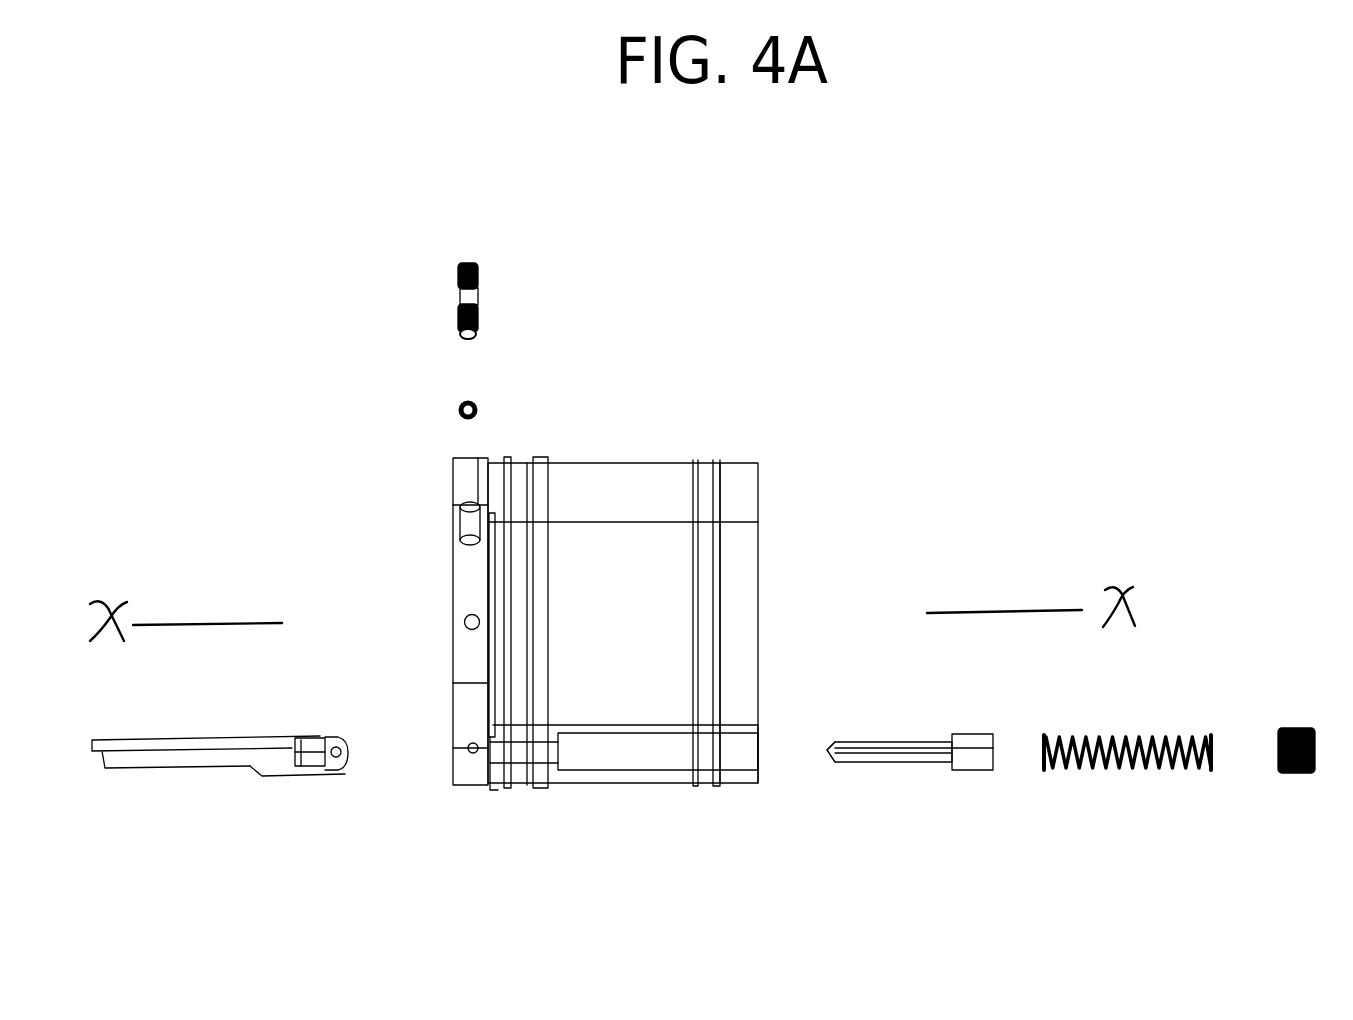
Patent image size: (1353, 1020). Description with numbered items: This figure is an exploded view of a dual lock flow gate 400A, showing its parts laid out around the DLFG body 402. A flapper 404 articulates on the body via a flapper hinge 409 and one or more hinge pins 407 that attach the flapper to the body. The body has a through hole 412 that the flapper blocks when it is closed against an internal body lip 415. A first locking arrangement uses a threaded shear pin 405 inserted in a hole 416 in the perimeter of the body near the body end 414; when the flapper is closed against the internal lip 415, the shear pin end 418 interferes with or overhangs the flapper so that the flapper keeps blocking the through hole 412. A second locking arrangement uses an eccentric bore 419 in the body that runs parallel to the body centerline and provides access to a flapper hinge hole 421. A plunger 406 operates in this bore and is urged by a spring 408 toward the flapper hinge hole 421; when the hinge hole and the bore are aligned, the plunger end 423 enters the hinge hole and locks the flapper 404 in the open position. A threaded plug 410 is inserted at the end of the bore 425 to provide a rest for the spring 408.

The dual lock flow gate 400A is at (1088, 180).
The DLFG body 402 is at (612, 462).
The flapper 404 is at (180, 738).
The threaded shear pin 405 is at (478, 273).
The plunger 406 is at (978, 735).
The hinge pin 407 is at (480, 411).
The spring 408 is at (1118, 736).
The flapper hinge 409 is at (345, 742).
The threaded plug 410 is at (1292, 728).
The body through hole 412 is at (762, 572).
The body end 414 is at (455, 770).
The internal body lip 415 is at (487, 560).
The shear pin hole 416 is at (452, 458).
The shear pin end 418 is at (472, 340).
The eccentric bore 419 is at (618, 772).
The flapper hinge hole 421 is at (352, 762).
The plunger end 423 is at (827, 745).
The bore end 425 is at (762, 752).